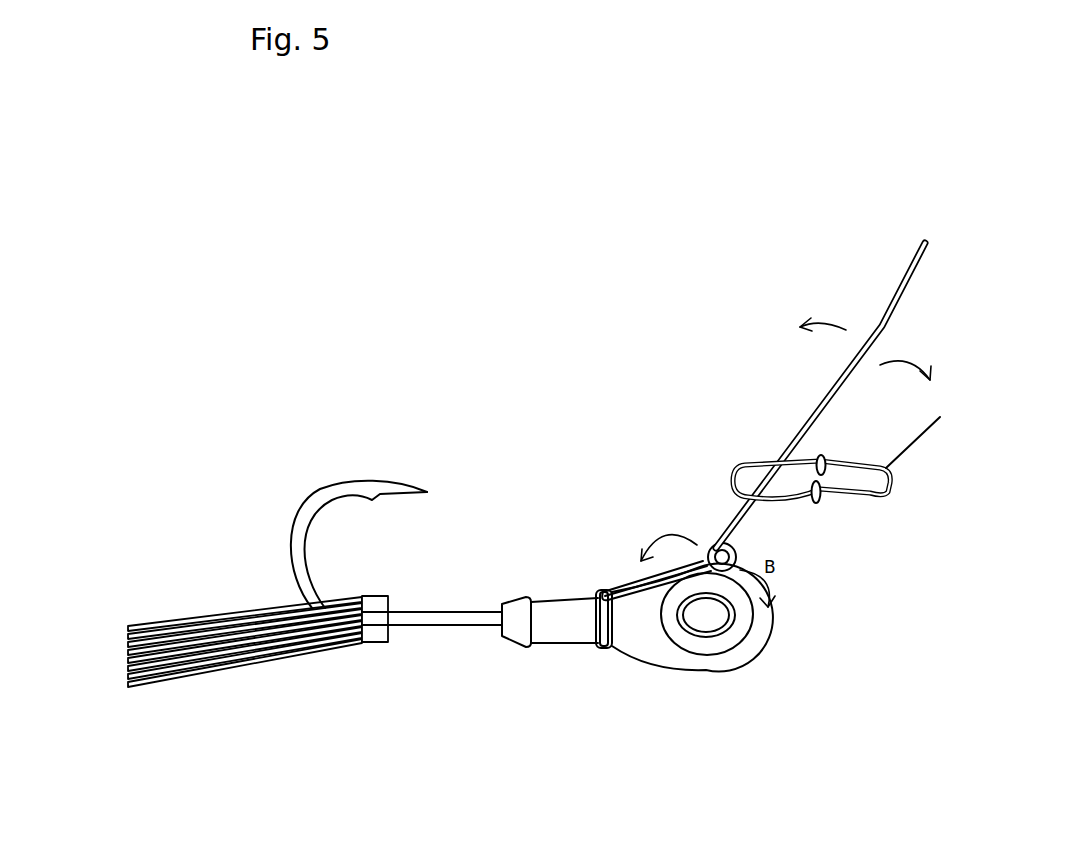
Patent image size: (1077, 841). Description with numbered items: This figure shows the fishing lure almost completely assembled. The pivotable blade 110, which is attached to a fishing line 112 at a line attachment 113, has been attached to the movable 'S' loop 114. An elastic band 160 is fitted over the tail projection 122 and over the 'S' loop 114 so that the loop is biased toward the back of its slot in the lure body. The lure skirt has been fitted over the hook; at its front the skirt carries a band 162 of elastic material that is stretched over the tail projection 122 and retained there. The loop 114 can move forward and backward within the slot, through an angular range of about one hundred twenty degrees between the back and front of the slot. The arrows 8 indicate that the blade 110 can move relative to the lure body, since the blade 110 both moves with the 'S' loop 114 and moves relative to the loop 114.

The arrows 8 is at (849, 348).
The pivotable blade 110 is at (908, 292).
The fishing line 112 is at (917, 440).
The beads 113 is at (826, 502).
The movable 'S' loop 114 is at (713, 541).
The tail projection 122 is at (562, 645).
The elastic band 160 is at (606, 589).
The band 162 is at (376, 594).